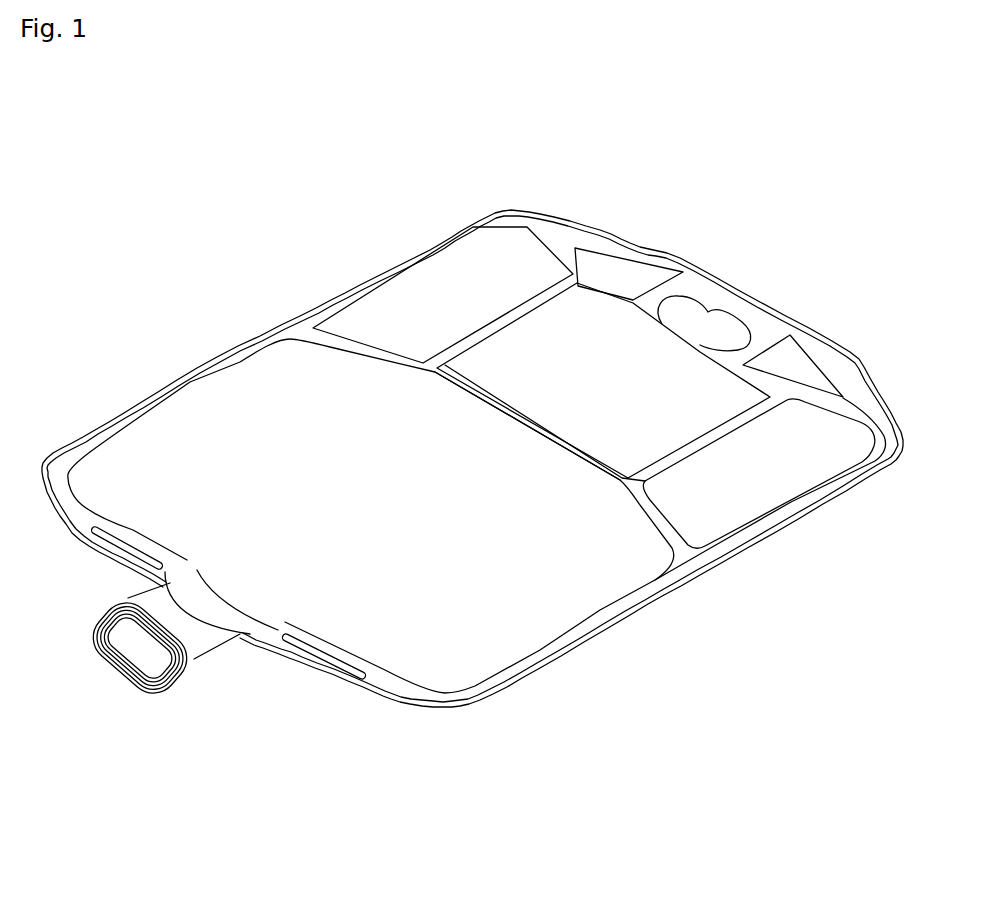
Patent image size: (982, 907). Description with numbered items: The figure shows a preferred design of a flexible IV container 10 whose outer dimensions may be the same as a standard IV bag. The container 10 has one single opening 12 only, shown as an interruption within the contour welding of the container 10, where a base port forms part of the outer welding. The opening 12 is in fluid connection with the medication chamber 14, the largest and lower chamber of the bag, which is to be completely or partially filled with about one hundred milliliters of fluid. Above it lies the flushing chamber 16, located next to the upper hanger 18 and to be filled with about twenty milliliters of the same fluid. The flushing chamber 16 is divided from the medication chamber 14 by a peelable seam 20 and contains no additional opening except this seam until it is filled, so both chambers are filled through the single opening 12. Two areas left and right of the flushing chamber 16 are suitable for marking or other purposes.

The flexible IV container 10 is at (206, 290).
The opening 12 is at (145, 647).
The medication chamber 14 is at (397, 540).
The flushing chamber 16 is at (567, 345).
The upper hanger 18 is at (713, 318).
The peelable seam 20 is at (580, 447).